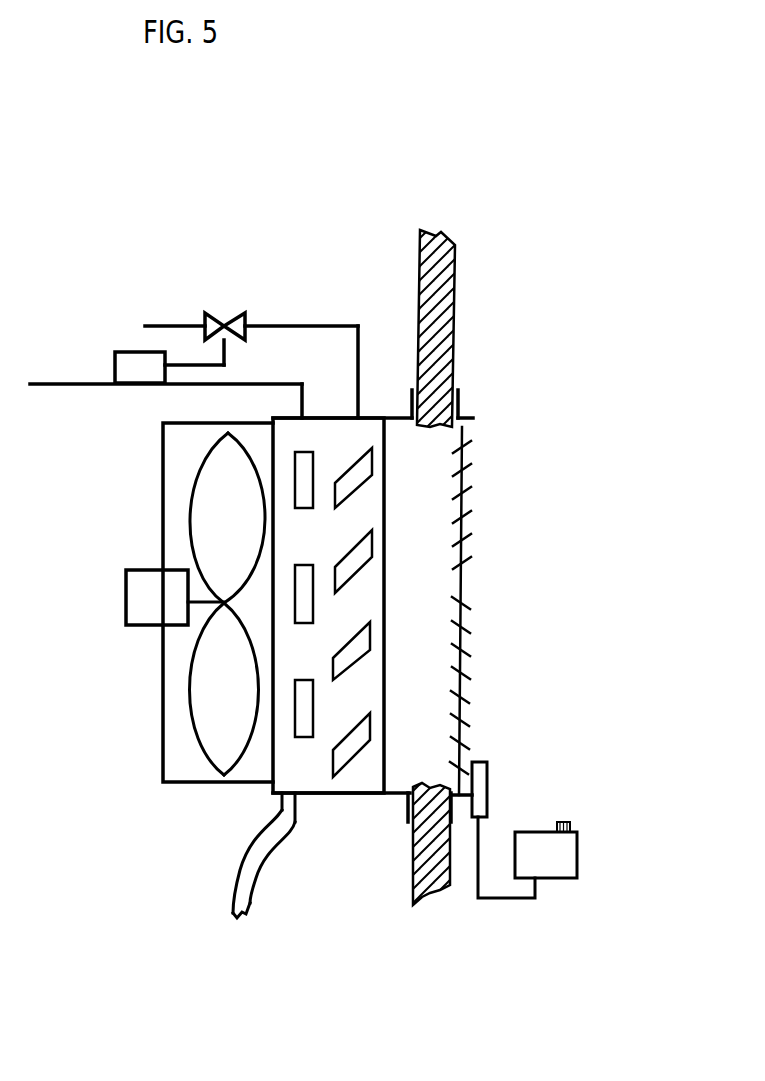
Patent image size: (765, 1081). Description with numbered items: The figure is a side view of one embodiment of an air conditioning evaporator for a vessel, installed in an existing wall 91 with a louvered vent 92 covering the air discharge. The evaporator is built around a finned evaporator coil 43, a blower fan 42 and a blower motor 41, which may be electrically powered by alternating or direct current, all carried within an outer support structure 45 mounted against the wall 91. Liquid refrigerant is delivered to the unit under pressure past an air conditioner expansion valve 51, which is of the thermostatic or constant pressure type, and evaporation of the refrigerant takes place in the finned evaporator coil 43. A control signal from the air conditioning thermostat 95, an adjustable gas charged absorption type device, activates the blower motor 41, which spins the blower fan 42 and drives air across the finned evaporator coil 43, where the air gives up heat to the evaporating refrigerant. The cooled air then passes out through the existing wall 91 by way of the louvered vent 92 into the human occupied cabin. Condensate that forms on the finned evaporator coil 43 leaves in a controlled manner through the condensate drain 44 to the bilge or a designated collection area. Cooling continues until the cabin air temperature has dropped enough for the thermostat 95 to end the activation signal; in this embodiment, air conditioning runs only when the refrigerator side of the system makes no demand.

The blower motor 41 is at (143, 616).
The blower fan 42 is at (220, 753).
The finned evaporator coil 43 is at (340, 778).
The condensate drain 44 is at (252, 902).
The outer support structure 45 is at (162, 487).
The air conditioner expansion valve 51 is at (233, 290).
The existing wall 91 is at (455, 328).
The louvered vent 92 is at (465, 680).
The air conditioning thermostat 95 is at (542, 882).